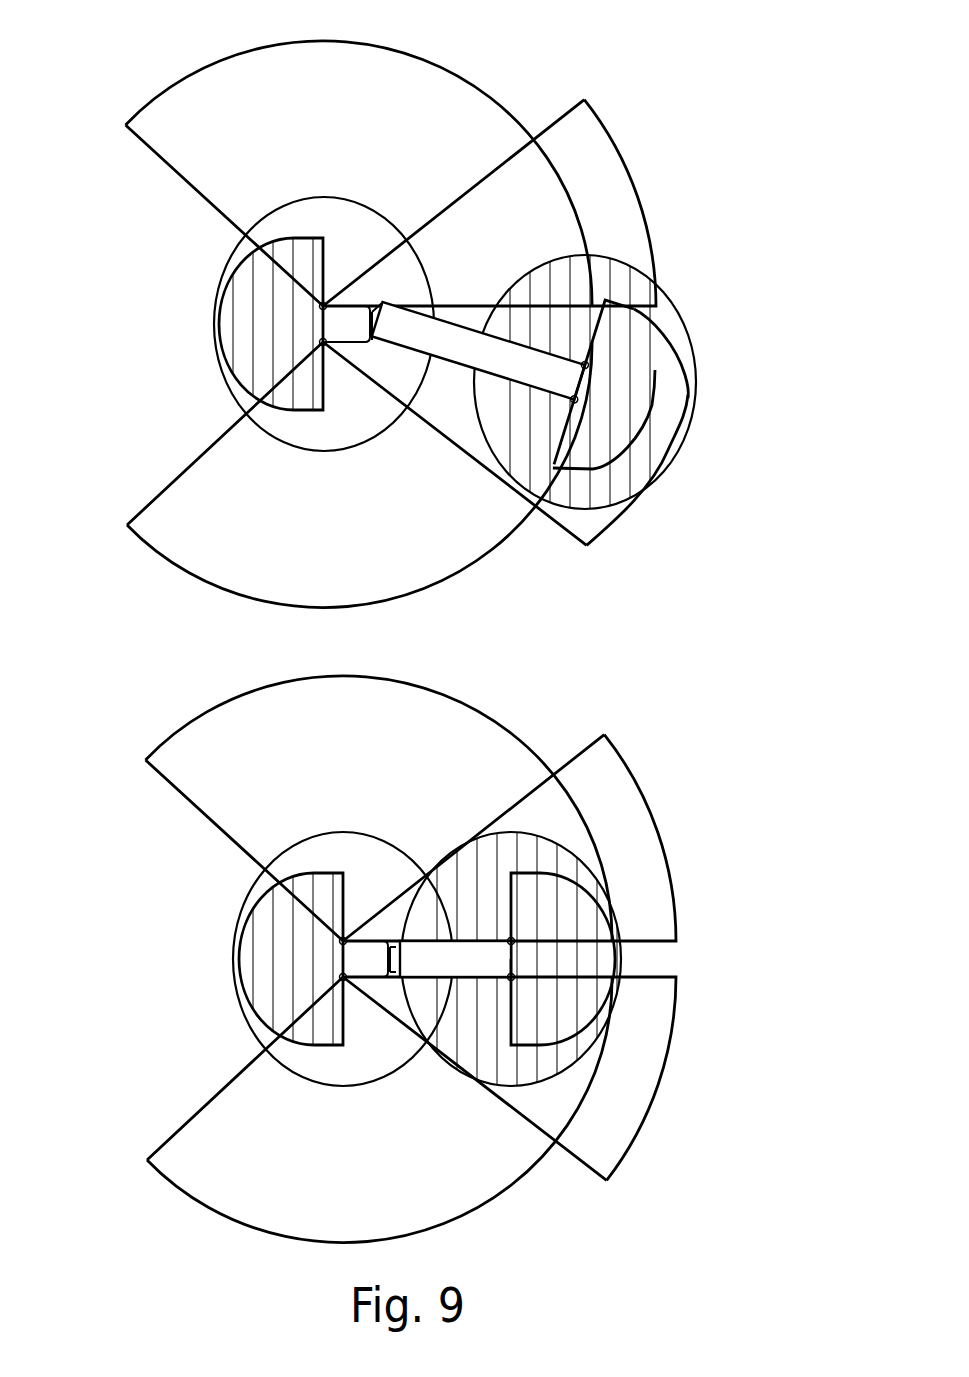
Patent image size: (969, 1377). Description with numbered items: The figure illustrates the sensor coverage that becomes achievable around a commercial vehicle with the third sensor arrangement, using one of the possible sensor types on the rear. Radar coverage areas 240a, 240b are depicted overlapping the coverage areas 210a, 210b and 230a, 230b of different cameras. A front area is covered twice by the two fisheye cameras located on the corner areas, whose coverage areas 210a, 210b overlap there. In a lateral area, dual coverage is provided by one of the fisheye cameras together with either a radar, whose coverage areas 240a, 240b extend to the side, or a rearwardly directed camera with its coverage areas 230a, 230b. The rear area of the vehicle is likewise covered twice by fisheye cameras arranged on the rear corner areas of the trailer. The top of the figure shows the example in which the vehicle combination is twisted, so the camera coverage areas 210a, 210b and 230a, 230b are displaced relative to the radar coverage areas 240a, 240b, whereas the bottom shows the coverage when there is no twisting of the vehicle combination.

The coverage area 210a is at (222, 379).
The coverage area 210b is at (222, 259).
The coverage area 230a is at (612, 533).
The coverage area 230b is at (632, 173).
The radar coverage area 240a is at (163, 507).
The radar coverage area 240b is at (460, 72).